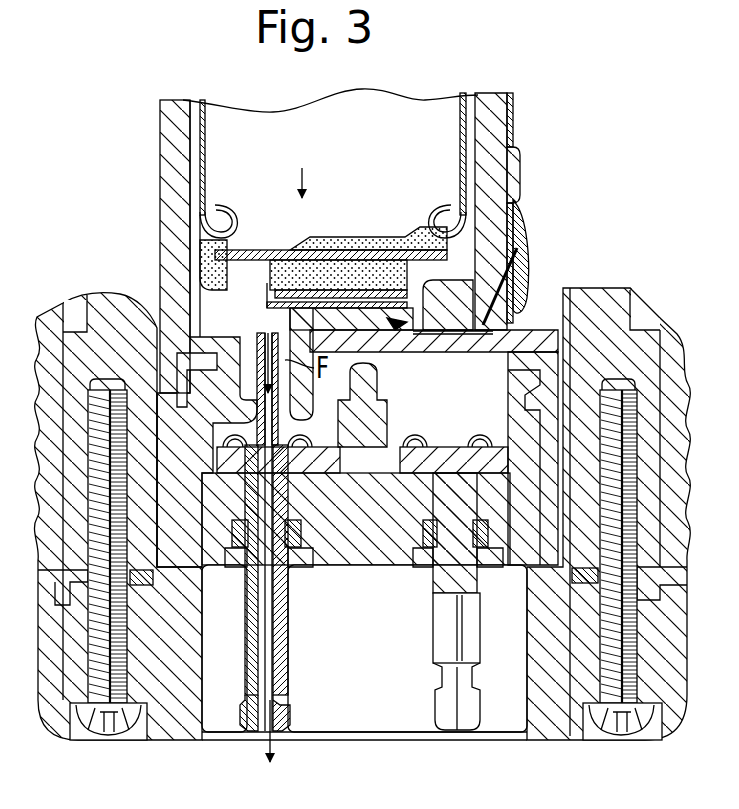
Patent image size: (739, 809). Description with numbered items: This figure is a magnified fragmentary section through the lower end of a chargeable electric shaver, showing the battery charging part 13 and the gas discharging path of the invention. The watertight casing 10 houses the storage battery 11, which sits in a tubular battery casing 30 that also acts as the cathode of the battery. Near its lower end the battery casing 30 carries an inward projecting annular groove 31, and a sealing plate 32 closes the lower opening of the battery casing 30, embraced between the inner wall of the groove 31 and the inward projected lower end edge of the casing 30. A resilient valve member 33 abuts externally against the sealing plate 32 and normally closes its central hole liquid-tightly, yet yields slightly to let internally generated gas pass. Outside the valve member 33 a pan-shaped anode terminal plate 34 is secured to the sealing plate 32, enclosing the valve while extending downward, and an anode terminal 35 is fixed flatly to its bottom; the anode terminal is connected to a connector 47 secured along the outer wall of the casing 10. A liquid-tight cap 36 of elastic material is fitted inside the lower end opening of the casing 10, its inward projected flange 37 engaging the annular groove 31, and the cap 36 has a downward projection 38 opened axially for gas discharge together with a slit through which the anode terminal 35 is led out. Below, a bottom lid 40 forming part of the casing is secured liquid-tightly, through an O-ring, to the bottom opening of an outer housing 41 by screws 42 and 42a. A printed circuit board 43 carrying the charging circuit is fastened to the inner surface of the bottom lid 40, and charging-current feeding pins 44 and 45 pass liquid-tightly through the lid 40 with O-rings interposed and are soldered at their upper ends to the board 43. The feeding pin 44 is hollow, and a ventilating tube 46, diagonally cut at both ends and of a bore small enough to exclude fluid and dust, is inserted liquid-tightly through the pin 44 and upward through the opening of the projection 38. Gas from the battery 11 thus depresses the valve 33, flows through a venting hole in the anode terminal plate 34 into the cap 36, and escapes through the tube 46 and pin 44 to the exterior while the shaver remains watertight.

The casing 10 is at (488, 108).
The storage battery 11 is at (393, 110).
The battery charging part 13 is at (524, 329).
The tubular casing 30 is at (487, 138).
The annular groove 31 is at (438, 220).
The sealing plate 32 is at (522, 252).
The resilient valve member 33 is at (284, 250).
The anode terminal plate 34 is at (306, 250).
The anode terminal 35 is at (345, 288).
The liquid-tight cap 36 is at (457, 305).
The inward projected flange 37 is at (515, 200).
The downward projection 38 is at (197, 352).
The bottom lid 40 is at (557, 722).
The outer housing 41 is at (618, 306).
The screw 42 is at (120, 618).
The screw 42a is at (600, 605).
The printed circuit board 43 is at (396, 455).
The charging-current feeding pin 44 is at (286, 642).
The charging-current feeding pin 45 is at (440, 620).
The ventilating tube 46 is at (288, 598).
The connector 47 is at (513, 116).